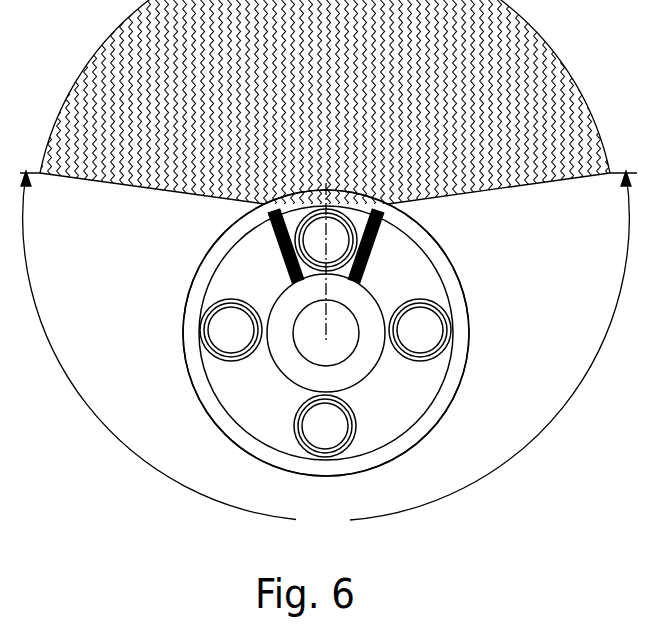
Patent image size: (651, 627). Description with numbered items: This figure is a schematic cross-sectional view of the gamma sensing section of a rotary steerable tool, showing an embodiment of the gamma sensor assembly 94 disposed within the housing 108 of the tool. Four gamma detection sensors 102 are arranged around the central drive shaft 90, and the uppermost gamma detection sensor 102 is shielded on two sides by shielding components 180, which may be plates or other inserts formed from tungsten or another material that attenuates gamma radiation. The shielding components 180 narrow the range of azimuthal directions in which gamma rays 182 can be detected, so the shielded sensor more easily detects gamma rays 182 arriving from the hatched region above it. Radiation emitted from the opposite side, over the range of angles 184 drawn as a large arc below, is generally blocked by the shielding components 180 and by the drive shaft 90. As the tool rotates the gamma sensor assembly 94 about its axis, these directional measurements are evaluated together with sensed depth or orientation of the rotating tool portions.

The drive shaft 90 is at (342, 348).
The gamma sensor assembly 94 is at (459, 401).
The gamma detection sensors 102 is at (202, 330).
The housing 108 is at (196, 389).
The shielding components 180 is at (269, 239).
The gamma rays 182 is at (344, 80).
The range of angles 184 is at (328, 350).